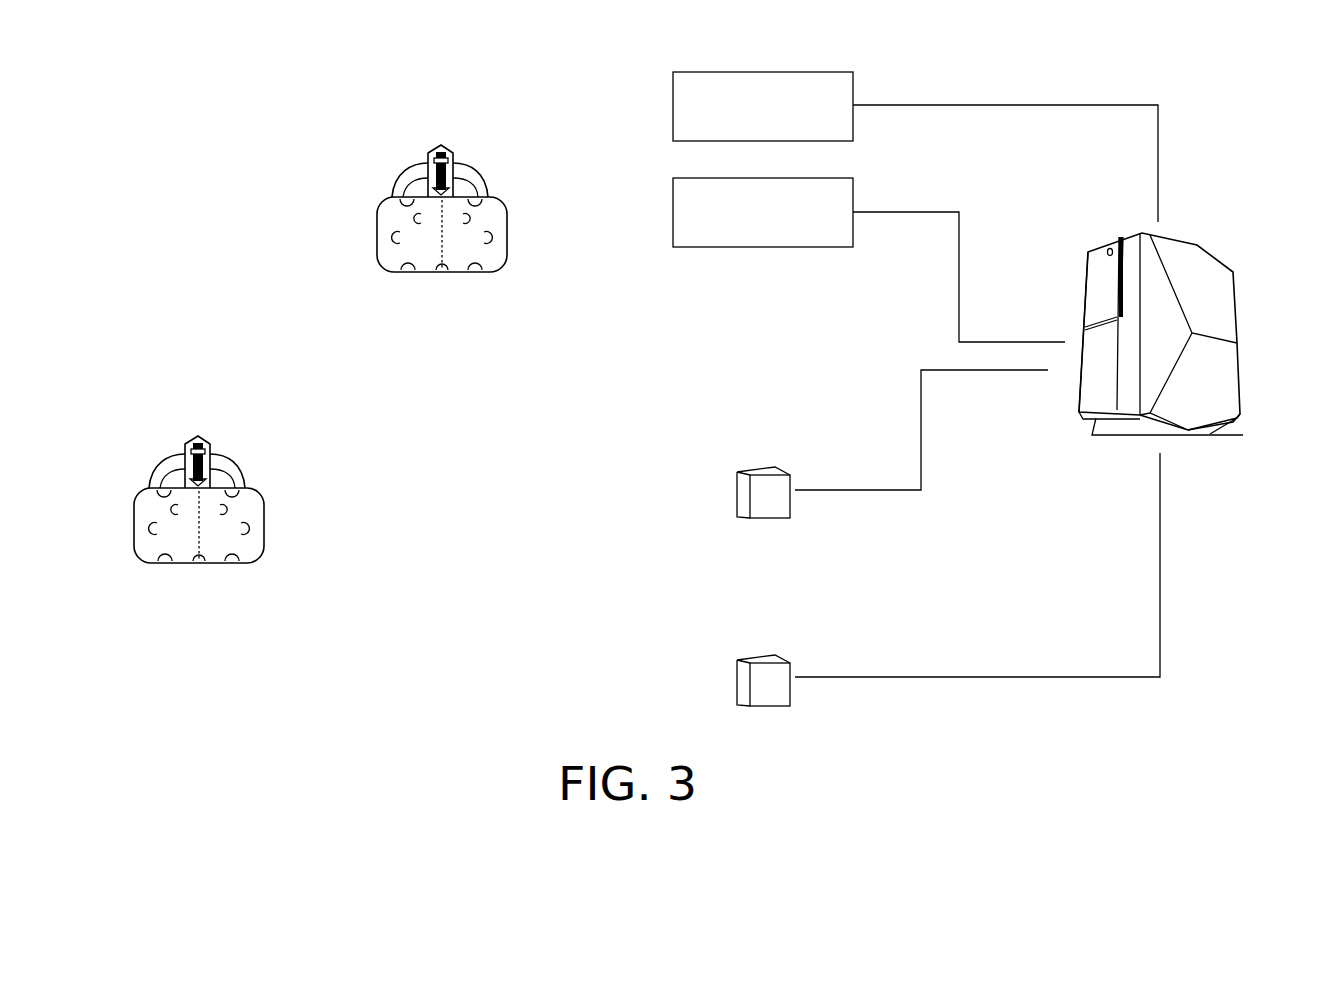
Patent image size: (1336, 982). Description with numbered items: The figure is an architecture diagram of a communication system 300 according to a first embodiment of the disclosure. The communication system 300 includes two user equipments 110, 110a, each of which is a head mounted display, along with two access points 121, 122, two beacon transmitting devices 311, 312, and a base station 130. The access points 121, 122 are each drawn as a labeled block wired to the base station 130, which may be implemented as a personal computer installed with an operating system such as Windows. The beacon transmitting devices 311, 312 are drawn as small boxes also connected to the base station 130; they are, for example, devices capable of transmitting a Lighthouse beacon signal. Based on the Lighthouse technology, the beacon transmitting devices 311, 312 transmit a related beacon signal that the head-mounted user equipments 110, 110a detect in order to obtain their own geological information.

The communication system 300 is at (489, 620).
The user equipment 110 is at (440, 148).
The user equipment 110a is at (196, 438).
The access point 121 is at (673, 101).
The access point 122 is at (673, 207).
The base station 130 is at (1210, 265).
The beacon transmitting device 311 is at (757, 470).
The beacon transmitting device 312 is at (757, 658).